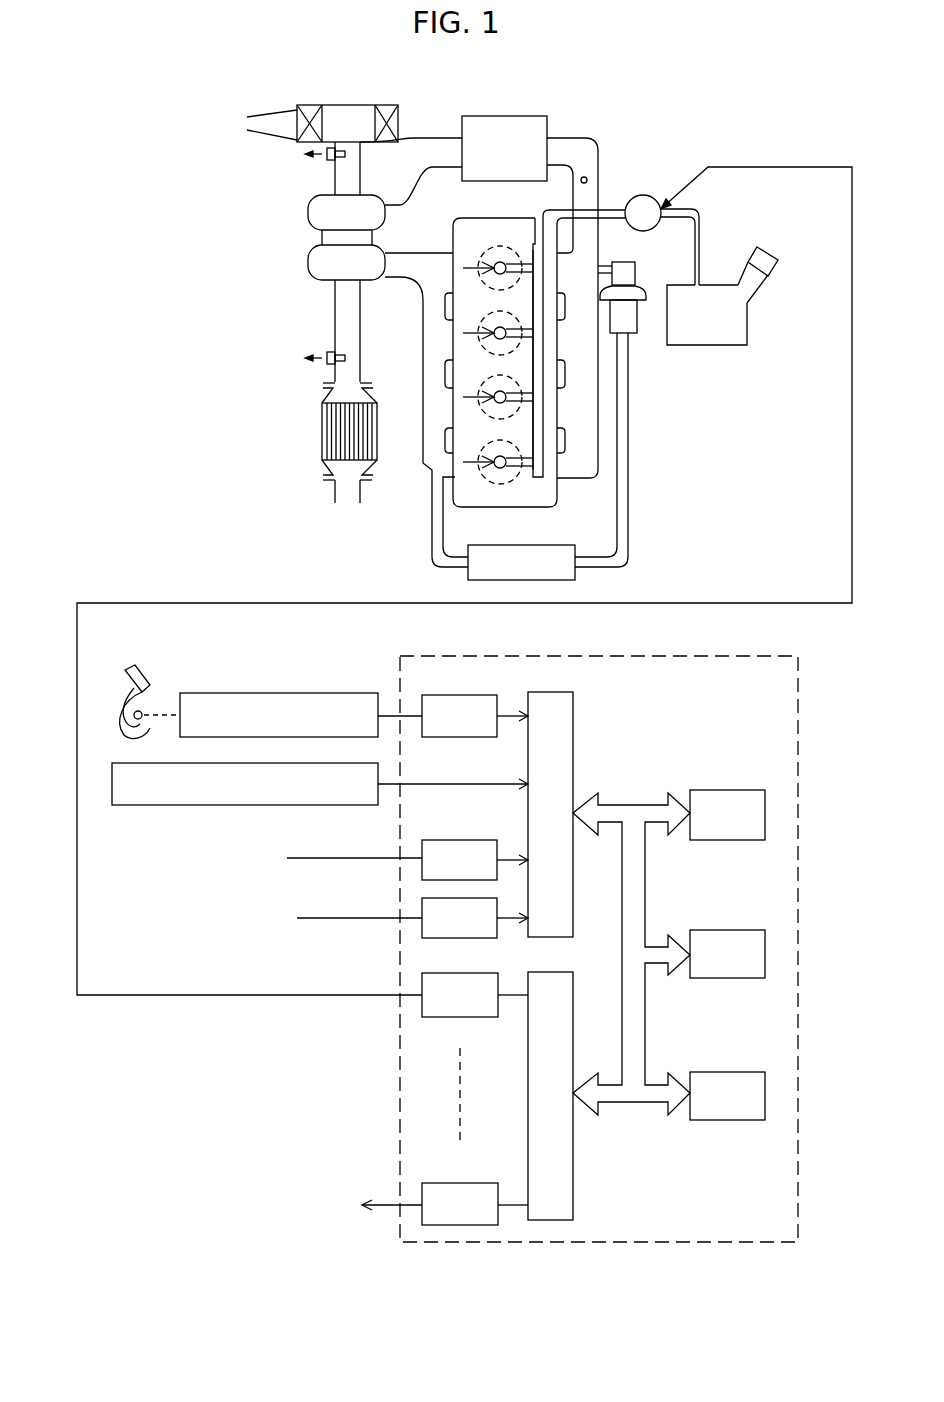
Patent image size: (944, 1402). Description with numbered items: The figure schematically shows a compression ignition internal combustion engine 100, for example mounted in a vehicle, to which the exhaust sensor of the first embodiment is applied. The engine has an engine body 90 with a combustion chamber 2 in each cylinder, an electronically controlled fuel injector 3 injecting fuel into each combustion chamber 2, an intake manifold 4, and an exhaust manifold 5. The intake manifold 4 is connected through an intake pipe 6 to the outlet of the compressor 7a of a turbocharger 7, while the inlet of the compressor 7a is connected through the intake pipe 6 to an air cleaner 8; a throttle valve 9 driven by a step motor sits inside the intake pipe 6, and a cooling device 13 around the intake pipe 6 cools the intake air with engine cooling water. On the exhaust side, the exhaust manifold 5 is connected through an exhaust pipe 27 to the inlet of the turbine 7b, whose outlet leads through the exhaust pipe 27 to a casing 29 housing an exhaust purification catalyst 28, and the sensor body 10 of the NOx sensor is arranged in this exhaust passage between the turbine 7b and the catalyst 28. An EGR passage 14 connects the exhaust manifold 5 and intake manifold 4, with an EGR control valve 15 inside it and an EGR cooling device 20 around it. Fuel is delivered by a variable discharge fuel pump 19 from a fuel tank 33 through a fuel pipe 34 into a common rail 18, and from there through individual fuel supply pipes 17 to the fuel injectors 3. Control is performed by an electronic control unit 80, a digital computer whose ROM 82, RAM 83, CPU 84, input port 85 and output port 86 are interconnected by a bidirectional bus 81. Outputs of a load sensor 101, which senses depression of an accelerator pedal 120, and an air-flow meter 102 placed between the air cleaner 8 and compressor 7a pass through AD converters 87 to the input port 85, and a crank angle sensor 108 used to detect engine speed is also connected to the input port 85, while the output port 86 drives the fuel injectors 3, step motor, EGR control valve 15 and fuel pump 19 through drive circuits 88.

The combustion chamber 2 is at (486, 260).
The fuel injector 3 is at (498, 273).
The intake manifold 4 is at (600, 470).
The exhaust manifold 5 is at (423, 466).
The intake pipe 6 is at (441, 139).
The turbocharger 7 is at (305, 236).
The compressor 7a is at (317, 212).
The turbine 7b is at (317, 266).
The air cleaner 8 is at (347, 110).
The throttle valve 9 is at (588, 178).
The sensor body 10 is at (326, 364).
The cooling device 13 is at (502, 116).
The EGR passage 14 is at (630, 524).
The EGR control valve 15 is at (624, 262).
The fuel supply pipe 17 is at (518, 258).
The common rail 18 is at (540, 347).
The fuel pump 19 is at (652, 195).
The EGR cooling device 20 is at (576, 577).
The exhaust pipe 27 is at (335, 327).
The exhaust purification catalyst 28 is at (327, 445).
The casing 29 is at (377, 434).
The fuel tank 33 is at (718, 346).
The fuel pipe 34 is at (703, 212).
The electronic control unit 80 is at (800, 733).
The bidirectional bus 81 is at (633, 803).
The ROM 82 is at (727, 790).
The RAM 83 is at (727, 930).
The CPU 84 is at (727, 1072).
The input port 85 is at (575, 714).
The output port 86 is at (575, 1190).
The AD converter 87 is at (462, 696).
The drive circuit 88 is at (420, 998).
The engine body 90 is at (565, 492).
The internal combustion engine 100 is at (692, 100).
The load sensor 101 is at (318, 693).
The air-flow meter 102 is at (323, 160).
The crank angle sensor 108 is at (300, 806).
The accelerator pedal 120 is at (143, 675).